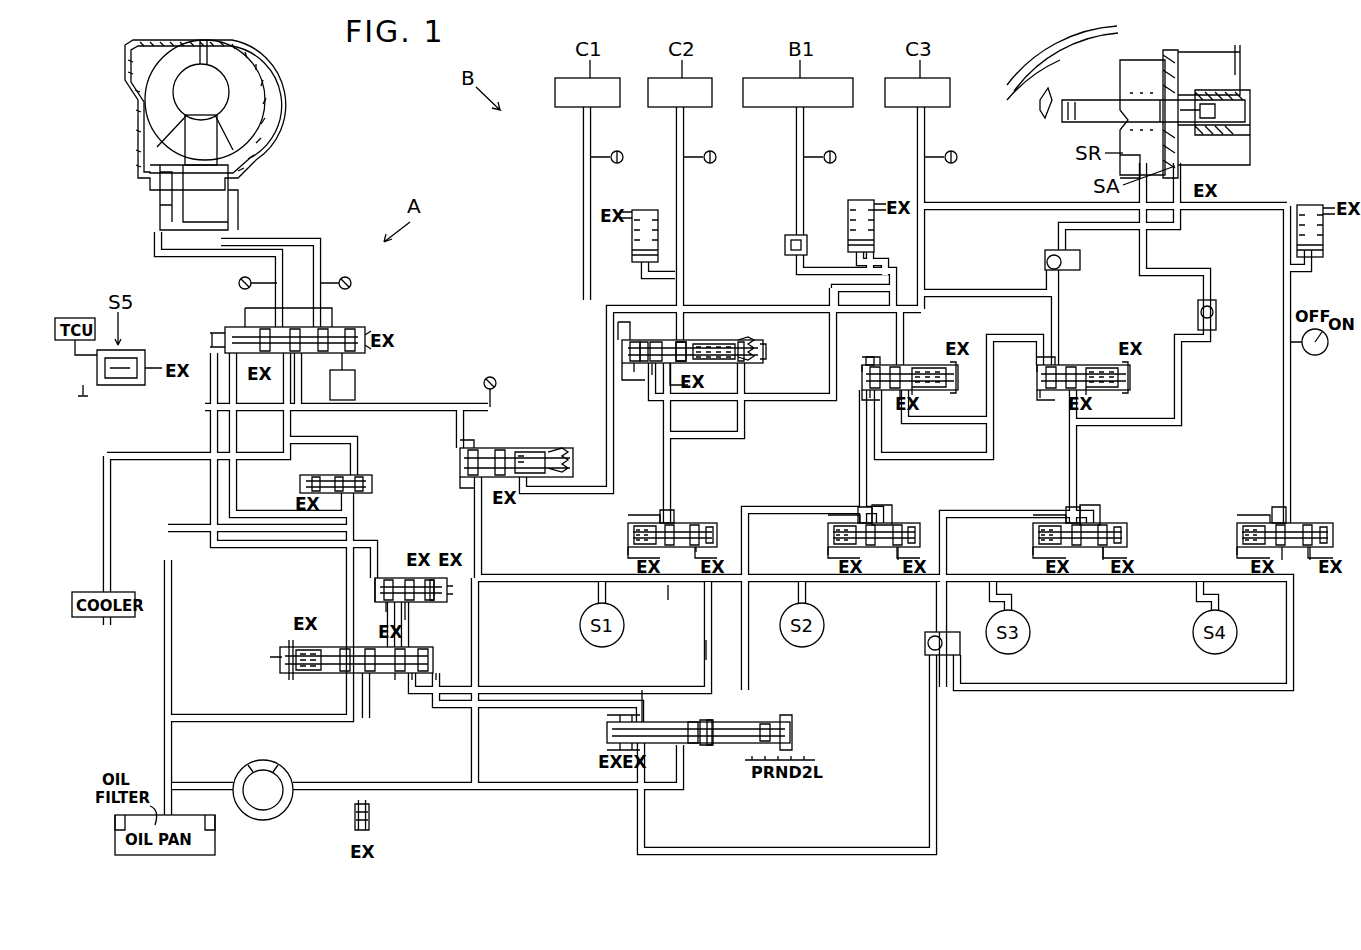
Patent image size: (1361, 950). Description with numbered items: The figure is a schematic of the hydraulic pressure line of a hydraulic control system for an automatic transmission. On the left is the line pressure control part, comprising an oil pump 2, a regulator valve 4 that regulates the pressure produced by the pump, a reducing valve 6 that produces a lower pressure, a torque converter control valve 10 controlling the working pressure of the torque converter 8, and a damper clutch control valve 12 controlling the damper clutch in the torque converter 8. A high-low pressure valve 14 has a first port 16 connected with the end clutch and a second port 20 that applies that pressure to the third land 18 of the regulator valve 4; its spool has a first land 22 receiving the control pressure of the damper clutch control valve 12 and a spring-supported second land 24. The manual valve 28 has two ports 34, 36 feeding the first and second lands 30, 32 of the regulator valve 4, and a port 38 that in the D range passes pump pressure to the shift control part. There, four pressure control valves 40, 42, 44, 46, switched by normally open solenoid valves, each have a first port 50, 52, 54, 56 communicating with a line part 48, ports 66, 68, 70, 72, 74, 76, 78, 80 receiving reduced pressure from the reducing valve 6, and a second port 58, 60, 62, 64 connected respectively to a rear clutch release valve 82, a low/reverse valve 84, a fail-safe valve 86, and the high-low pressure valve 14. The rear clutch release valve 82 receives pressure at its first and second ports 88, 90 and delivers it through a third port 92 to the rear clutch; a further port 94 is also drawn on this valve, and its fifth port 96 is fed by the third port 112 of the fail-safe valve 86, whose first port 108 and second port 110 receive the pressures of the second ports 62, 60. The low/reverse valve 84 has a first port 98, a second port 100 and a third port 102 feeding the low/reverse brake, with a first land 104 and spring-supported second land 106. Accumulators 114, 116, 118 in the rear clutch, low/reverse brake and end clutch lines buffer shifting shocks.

The oil pump 2 is at (263, 820).
The regulator valve 4 is at (269, 660).
The reducing valve 6 is at (540, 438).
The torque converter 8 is at (303, 104).
The torque converter control valve 10 is at (386, 489).
The damper clutch control valve 12 is at (198, 334).
The high-low pressure valve 14 is at (398, 575).
The first port 16 is at (380, 602).
The third land 18 is at (397, 676).
The second port 20 is at (408, 606).
The first land 22 is at (375, 586).
The second land 24 is at (432, 577).
The manual valve 28 is at (594, 734).
The first land 30 is at (436, 680).
The second land 32 is at (412, 680).
The port 34 is at (688, 722).
The port 36 is at (641, 718).
The port 38 is at (712, 722).
The first pressure control valve 40 is at (616, 539).
The second pressure control valve 42 is at (816, 539).
The third pressure control valve 44 is at (1021, 544).
The fourth pressure control valve 46 is at (1225, 544).
The line part 48 is at (706, 649).
The first port 50 is at (672, 586).
The first port 52 is at (885, 522).
The first port 54 is at (1093, 525).
The first port 56 is at (1284, 560).
The second port 58 is at (662, 522).
The second port 60 is at (858, 520).
The second port 62 is at (1066, 520).
The second port 64 is at (1275, 520).
The port 66 is at (698, 552).
The port 68 is at (628, 550).
The port 70 is at (898, 562).
The port 72 is at (828, 551).
The port 74 is at (1103, 562).
The port 76 is at (1033, 552).
The port 78 is at (1311, 562).
The port 80 is at (1237, 553).
The rear clutch release valve 82 is at (776, 356).
The low/reverse valve 84 is at (935, 354).
The fail-safe valve 86 is at (1108, 354).
The first port 88 is at (662, 375).
The second port 90 is at (744, 362).
The third port 92 is at (680, 342).
The port 94 is at (633, 345).
The fifth port 96 is at (640, 370).
The first port 98 is at (866, 393).
The second port 100 is at (901, 400).
The third port 102 is at (876, 362).
The first land 104 is at (871, 365).
The second land 106 is at (914, 390).
The first port 108 is at (1040, 393).
The second port 110 is at (1050, 367).
The third port 112 is at (1090, 391).
The accumulator 114 is at (645, 208).
The accumulator 116 is at (860, 198).
The accumulator 118 is at (1308, 203).